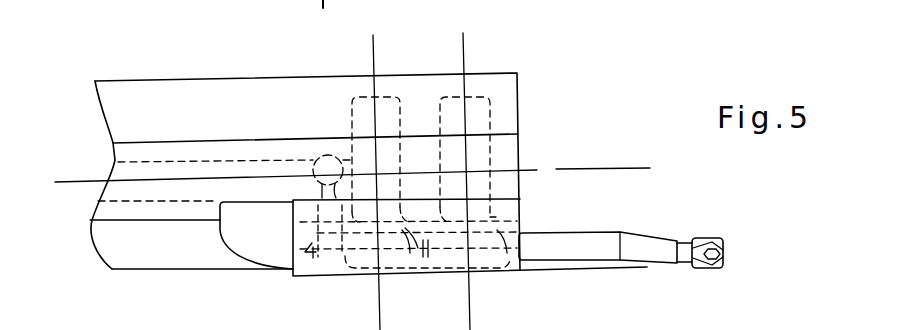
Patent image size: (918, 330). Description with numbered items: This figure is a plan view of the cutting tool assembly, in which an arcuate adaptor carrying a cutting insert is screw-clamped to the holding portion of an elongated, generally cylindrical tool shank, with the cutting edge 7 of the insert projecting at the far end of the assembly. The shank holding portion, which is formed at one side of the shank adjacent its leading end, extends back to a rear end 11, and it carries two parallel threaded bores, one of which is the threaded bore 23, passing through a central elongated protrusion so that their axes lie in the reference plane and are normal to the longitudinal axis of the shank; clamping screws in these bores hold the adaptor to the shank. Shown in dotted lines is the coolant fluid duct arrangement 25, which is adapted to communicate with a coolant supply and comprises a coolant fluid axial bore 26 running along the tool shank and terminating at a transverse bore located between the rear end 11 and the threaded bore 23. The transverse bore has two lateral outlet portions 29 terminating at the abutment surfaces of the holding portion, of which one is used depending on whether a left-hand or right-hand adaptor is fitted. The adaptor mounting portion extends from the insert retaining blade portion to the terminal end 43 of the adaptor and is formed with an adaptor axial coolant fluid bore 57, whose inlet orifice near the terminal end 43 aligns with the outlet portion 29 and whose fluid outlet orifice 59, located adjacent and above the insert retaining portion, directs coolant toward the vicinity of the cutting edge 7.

The cutting edge 7 is at (724, 249).
The rear end 11 is at (248, 243).
The threaded bore 23 is at (388, 108).
The coolant fluid duct arrangement 25 is at (278, 164).
The coolant fluid axial bore 26 is at (218, 152).
The outlet portions 29 is at (327, 207).
The terminal end 43 is at (296, 258).
The adaptor axial coolant fluid bore 57 is at (424, 251).
The fluid outlet orifice 59 is at (523, 232).